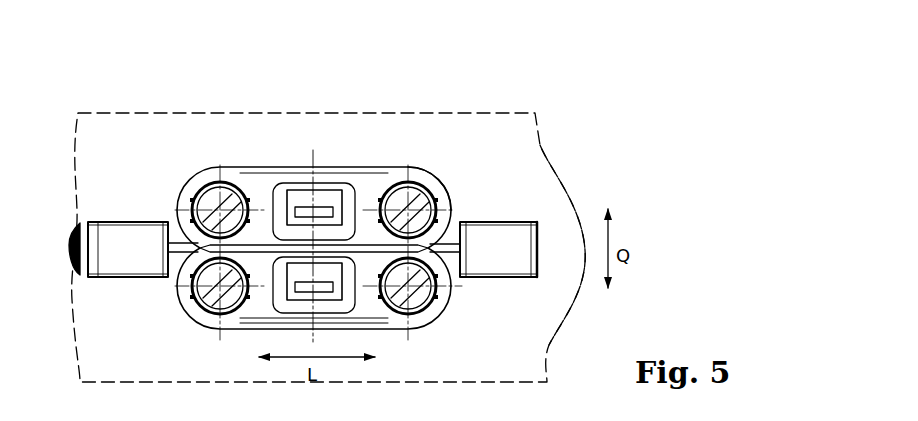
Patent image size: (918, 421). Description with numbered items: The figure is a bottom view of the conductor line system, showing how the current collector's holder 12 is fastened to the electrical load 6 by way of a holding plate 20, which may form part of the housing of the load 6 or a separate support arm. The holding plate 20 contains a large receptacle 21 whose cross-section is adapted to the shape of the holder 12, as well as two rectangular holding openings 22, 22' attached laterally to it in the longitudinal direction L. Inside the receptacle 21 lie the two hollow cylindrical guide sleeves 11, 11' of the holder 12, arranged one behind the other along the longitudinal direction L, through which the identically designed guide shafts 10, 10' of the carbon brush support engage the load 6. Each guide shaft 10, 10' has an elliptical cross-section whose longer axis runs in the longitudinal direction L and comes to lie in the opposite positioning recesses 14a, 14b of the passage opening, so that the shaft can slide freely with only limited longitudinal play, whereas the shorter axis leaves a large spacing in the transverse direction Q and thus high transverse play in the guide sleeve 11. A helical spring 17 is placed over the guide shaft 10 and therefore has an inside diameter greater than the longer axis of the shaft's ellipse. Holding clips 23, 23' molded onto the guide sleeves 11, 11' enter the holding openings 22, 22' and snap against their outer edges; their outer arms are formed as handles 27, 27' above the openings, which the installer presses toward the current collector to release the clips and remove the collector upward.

The electrical load 6 is at (547, 111).
The holding plate 20 is at (560, 190).
The receptacle 21 is at (182, 179).
The holder 12 is at (291, 163).
The guide shaft 10 is at (393, 182).
The guide sleeve 11 is at (408, 178).
The guide shaft 10' is at (206, 183).
The guide sleeve 11' is at (220, 178).
The positioning recess 14a is at (446, 184).
The positioning recess 14b is at (377, 190).
The helical spring 17 is at (420, 186).
The holding opening 22 is at (483, 211).
The holding opening 22' is at (143, 210).
The holding clip 23 is at (498, 289).
The holding clip 23' is at (128, 290).
The handle 27 is at (523, 289).
The handle 27' is at (76, 260).